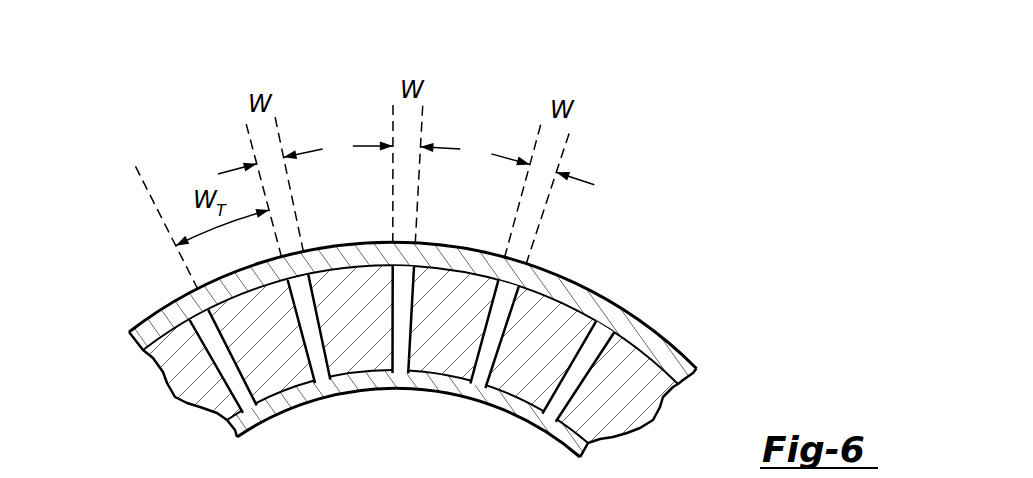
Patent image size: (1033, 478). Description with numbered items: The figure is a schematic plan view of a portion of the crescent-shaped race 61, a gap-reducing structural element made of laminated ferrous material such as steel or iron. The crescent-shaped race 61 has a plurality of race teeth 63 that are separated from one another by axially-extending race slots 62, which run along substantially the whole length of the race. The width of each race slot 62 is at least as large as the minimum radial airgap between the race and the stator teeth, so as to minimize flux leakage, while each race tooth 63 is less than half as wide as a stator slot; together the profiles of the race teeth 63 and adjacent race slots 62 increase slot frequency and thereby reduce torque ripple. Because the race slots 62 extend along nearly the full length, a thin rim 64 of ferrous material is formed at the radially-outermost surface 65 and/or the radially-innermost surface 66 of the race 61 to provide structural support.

The crescent-shaped race 61 is at (486, 285).
The race slots 62 is at (224, 375).
The race teeth 63 is at (276, 358).
The thin rim 64 is at (459, 244).
The radially-outermost surface 65 is at (620, 302).
The radially-innermost surface 66 is at (338, 396).